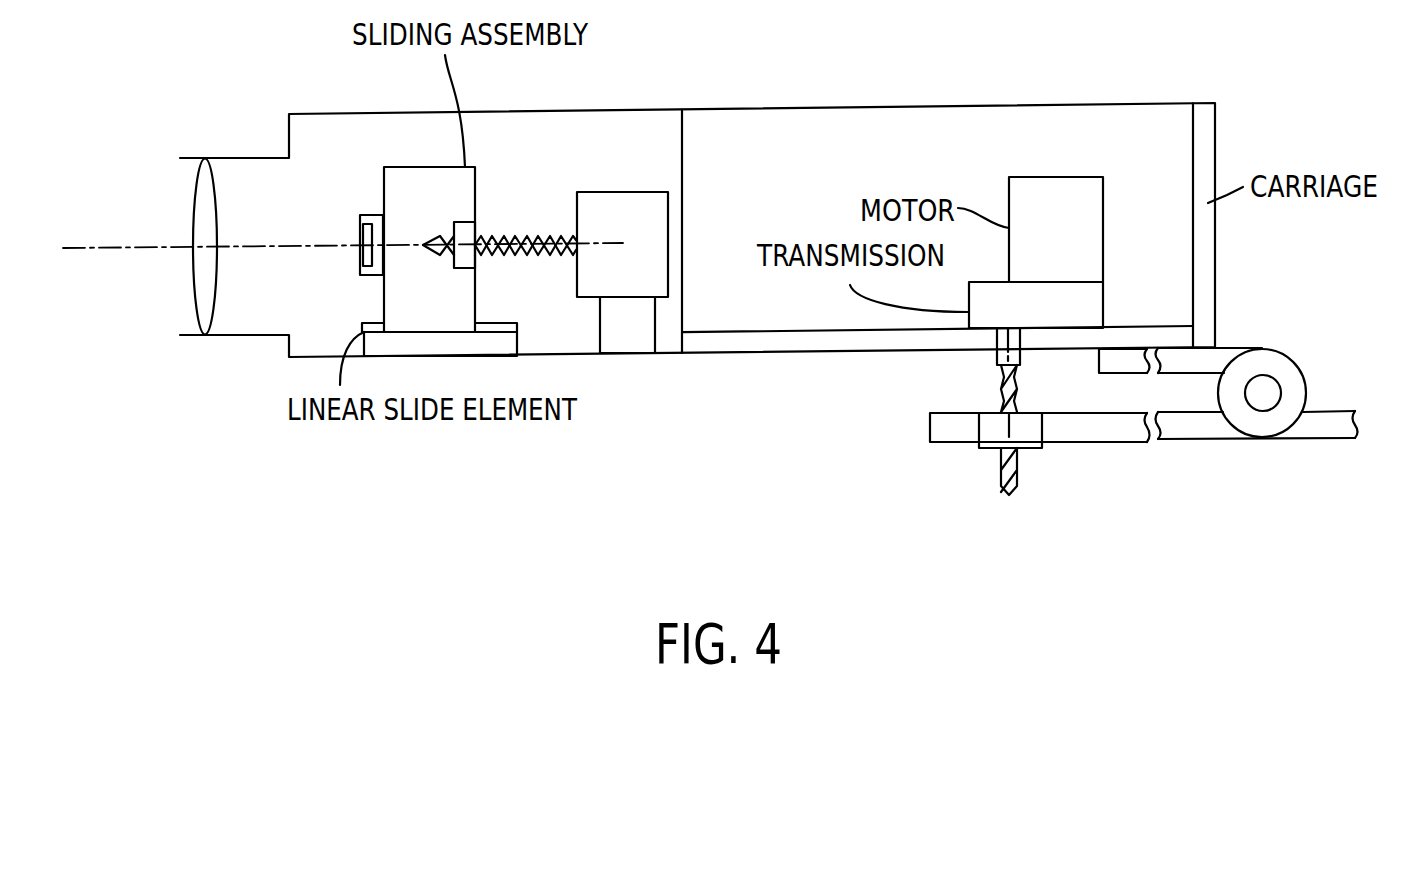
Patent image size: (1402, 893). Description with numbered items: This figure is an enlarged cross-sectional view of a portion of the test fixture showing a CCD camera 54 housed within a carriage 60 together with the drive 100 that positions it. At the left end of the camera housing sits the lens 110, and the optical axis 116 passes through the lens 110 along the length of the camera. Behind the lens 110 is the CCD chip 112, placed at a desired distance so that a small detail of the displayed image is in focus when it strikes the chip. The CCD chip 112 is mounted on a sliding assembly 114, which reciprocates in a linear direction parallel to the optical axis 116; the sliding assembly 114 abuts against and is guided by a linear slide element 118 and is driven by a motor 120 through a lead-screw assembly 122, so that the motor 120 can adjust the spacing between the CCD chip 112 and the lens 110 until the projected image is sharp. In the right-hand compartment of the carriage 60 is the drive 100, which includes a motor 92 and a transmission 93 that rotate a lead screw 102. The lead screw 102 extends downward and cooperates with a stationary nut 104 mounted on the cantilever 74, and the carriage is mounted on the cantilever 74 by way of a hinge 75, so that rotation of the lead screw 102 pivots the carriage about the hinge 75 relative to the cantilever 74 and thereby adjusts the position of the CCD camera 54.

The CCD camera 54 is at (522, 466).
The carriage 60 is at (1216, 143).
The cantilever 74 is at (1205, 440).
The hinge 75 is at (1255, 348).
The motor 92 is at (1025, 177).
The transmission 93 is at (1103, 300).
The drive 100 is at (951, 178).
The lead screw 102 is at (1010, 497).
The stationary nut 104 is at (1030, 452).
The lens 110 is at (192, 220).
The CCD chip 112 is at (360, 218).
The sliding assembly 114 is at (407, 167).
The optical axis 116 is at (160, 250).
The linear slide element 118 is at (371, 322).
The motor 120 is at (598, 192).
The lead-screw assembly 122 is at (528, 236).